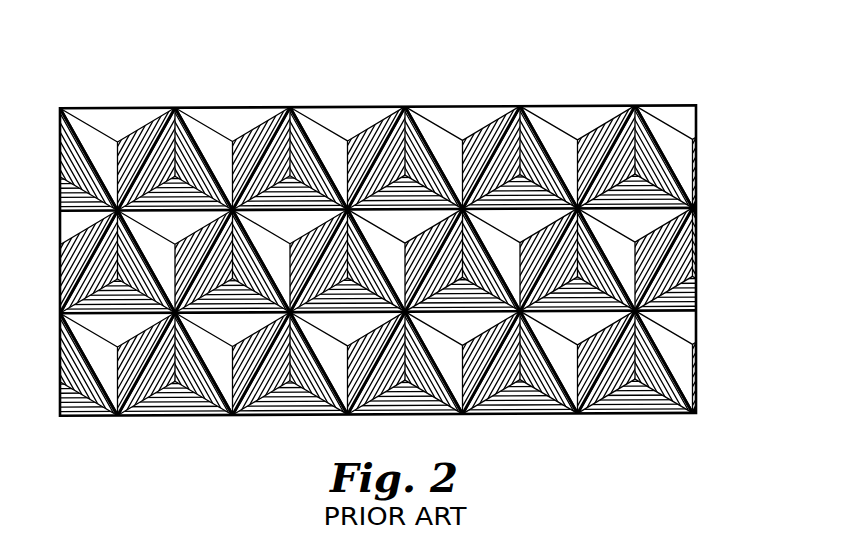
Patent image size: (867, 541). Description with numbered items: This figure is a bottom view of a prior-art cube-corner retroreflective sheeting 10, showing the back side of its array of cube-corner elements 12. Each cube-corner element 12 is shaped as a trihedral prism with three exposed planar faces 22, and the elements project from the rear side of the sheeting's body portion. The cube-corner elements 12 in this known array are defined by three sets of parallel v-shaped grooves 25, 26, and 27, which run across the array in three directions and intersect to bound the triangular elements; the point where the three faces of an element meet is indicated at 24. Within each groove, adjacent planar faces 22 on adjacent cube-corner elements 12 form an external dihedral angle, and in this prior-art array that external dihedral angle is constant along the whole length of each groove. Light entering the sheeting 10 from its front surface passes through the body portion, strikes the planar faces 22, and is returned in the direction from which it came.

The cube-corner retroreflective sheeting 10 is at (433, 220).
The cube-corner elements 12 is at (355, 107).
The planar faces 22 is at (247, 135).
The cube corner apex 24 is at (577, 140).
The v-shaped grooves 25 is at (660, 303).
The v-shaped grooves 26 is at (665, 362).
The v-shaped grooves 27 is at (252, 370).